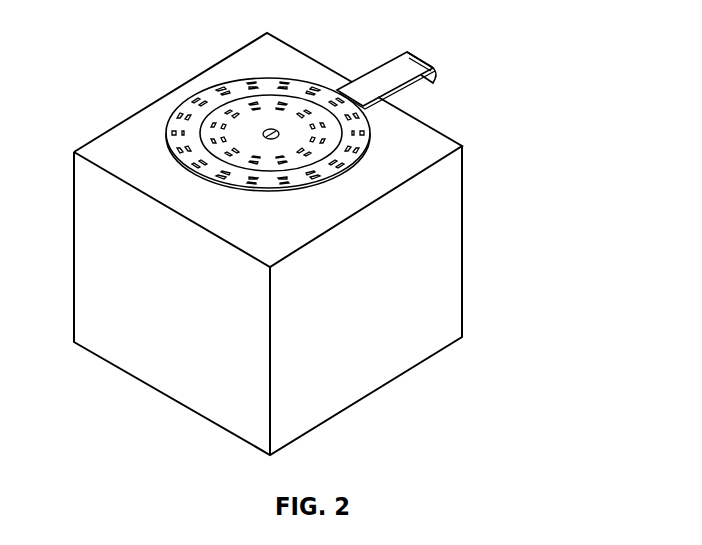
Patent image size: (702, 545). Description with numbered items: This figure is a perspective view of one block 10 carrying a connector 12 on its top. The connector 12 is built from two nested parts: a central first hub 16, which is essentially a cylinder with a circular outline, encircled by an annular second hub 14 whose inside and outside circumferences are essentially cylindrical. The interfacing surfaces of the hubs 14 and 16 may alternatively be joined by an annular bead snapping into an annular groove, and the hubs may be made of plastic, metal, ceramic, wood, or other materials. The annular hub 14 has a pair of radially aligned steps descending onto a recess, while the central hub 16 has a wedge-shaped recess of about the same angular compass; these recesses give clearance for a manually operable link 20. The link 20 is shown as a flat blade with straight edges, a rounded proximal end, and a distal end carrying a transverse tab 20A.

The block 10 is at (470, 243).
The connector 12 is at (200, 86).
The annular second hub 14 is at (362, 164).
The central first hub 16 is at (207, 138).
The manually operable link 20 is at (383, 63).
The transverse tab 20A is at (438, 74).